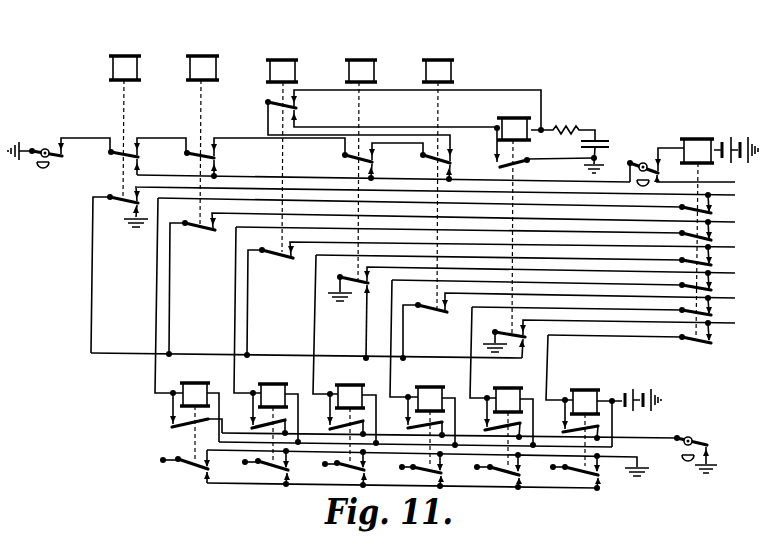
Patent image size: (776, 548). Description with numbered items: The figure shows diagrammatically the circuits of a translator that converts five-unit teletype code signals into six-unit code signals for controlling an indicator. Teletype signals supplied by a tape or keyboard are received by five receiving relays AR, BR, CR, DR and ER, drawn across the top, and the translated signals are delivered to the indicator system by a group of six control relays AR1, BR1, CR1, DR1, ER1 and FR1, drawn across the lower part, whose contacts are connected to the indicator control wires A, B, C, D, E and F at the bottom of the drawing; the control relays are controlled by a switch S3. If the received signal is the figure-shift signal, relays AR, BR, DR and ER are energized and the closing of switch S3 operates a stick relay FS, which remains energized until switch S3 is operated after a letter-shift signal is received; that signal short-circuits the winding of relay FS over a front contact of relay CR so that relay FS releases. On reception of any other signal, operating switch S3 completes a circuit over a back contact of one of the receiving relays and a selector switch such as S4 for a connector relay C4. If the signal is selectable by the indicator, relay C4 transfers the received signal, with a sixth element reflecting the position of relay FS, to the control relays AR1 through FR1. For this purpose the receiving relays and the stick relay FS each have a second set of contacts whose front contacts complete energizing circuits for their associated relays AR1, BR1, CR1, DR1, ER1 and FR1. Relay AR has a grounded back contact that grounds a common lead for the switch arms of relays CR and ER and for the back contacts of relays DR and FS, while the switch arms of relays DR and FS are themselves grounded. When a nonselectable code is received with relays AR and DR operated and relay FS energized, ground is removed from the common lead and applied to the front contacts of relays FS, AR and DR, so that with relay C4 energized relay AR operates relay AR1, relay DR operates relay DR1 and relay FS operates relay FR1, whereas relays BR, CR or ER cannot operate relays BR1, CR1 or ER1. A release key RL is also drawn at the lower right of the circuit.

The receiving relay AR is at (128, 116).
The receiving relay BR is at (204, 129).
The receiving relay CR is at (283, 143).
The receiving relay DR is at (362, 157).
The receiving relay ER is at (439, 171).
The stick relay FS is at (514, 214).
The connector relay C4 is at (719, 227).
The switch S3 is at (59, 138).
The selector switch S4 is at (678, 156).
The control relay AR1 is at (196, 411).
The control relay BR1 is at (275, 411).
The control relay CR1 is at (353, 413).
The control relay DR1 is at (431, 415).
The control relay ER1 is at (510, 416).
The control relay FR1 is at (611, 417).
The release key RL is at (695, 440).
The indicator control wire A is at (172, 466).
The indicator control wire B is at (253, 467).
The indicator control wire C is at (335, 468).
The indicator control wire D is at (411, 470).
The indicator control wire E is at (489, 471).
The indicator control wire F is at (566, 472).